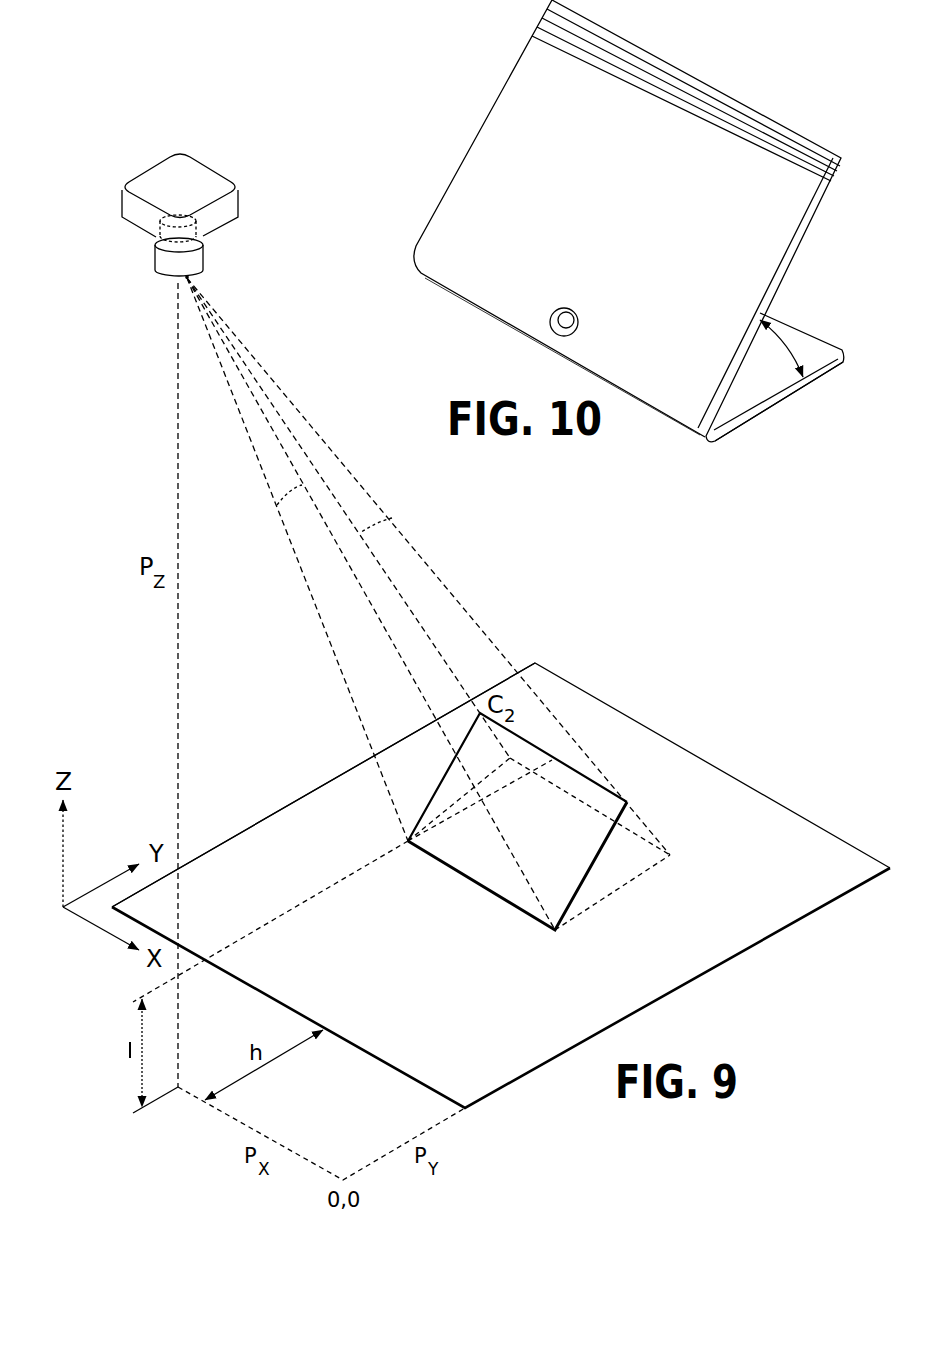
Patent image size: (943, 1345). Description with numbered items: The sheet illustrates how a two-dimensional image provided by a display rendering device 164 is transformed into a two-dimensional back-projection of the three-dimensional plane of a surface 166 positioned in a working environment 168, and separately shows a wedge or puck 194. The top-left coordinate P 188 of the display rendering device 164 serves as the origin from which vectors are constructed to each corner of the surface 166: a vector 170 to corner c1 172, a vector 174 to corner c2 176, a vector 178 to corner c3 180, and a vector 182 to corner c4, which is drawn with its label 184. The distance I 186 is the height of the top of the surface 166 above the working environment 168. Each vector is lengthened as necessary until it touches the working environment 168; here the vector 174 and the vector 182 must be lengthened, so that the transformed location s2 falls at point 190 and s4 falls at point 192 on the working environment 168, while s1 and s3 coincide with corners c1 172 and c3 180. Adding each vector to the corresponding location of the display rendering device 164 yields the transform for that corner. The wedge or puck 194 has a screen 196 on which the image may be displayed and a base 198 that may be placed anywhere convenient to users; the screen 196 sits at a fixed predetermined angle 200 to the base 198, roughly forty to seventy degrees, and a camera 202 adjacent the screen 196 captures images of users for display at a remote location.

In FIG. 9, the display rendering device 164 is at (205, 165).
In FIG. 9, the top-left coordinate P 188 is at (132, 263).
In FIG. 9, the vector to corner c1 170 is at (328, 647).
In FIG. 9, the vector to corner c3 178 is at (277, 505).
In FIG. 9, the vector to corner c2 174 is at (392, 518).
In FIG. 9, the vector to corner c4 182 is at (452, 577).
In FIG. 9, the corner c2 176 is at (516, 688).
In FIG. 9, the working environment 168 is at (821, 855).
In FIG. 9, the surface 166 is at (575, 862).
In FIG. 9, the point s2 190 is at (470, 765).
In FIG. 9, the point s4 192 is at (706, 856).
In FIG. 9, the corner c1 172 is at (406, 880).
In FIG. 9, the corner C4 184 is at (656, 789).
In FIG. 9, the corner c3 180 is at (556, 965).
In FIG. 9, the distance I 186 is at (126, 1052).
In FIG. 10, the wedge or puck 194 is at (486, 118).
In FIG. 10, the screen 196 is at (637, 221).
In FIG. 10, the camera 202 is at (574, 308).
In FIG. 10, the angle 200 is at (791, 340).
In FIG. 10, the base 198 is at (790, 396).